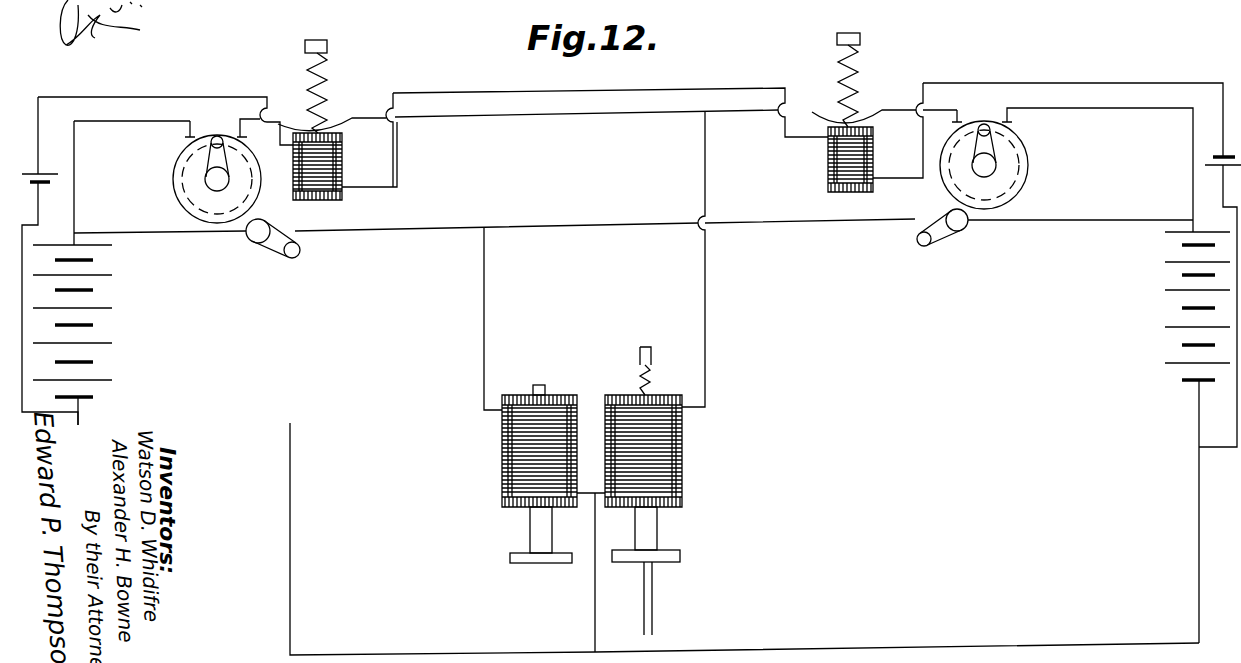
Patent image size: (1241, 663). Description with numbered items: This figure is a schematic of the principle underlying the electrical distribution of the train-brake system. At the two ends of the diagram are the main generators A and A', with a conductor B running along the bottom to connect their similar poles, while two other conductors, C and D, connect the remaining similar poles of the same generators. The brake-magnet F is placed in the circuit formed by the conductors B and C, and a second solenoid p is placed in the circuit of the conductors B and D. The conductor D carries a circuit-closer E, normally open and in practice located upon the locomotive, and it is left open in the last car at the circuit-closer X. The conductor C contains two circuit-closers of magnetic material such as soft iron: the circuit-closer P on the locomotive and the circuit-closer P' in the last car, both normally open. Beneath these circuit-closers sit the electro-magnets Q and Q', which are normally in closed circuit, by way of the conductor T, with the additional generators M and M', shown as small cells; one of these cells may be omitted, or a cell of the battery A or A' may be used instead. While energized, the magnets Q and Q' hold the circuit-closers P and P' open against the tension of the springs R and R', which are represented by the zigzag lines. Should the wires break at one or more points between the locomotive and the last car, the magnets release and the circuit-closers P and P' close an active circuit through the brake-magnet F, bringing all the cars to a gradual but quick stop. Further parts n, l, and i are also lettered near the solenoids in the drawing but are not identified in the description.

The additional generator M is at (50, 261).
The generator A is at (79, 273).
The circuit-closer E is at (273, 246).
The conductor D is at (742, 226).
The spring R is at (325, 86).
The electro-magnet Q is at (325, 166).
The circuit-closer P is at (332, 112).
The conductor T is at (690, 86).
The conductor C is at (597, 114).
The spring R' is at (839, 80).
The electro-magnet Q' is at (836, 159).
The circuit-closer P' is at (864, 131).
The additional generator M' is at (1082, 265).
The generator A' is at (1180, 437).
The circuit-closer X is at (940, 237).
The solenoid p is at (490, 456).
The terminal n is at (548, 388).
The brake-magnet F is at (692, 444).
The terminal l is at (649, 364).
The rod i is at (652, 592).
The conductor B is at (870, 648).